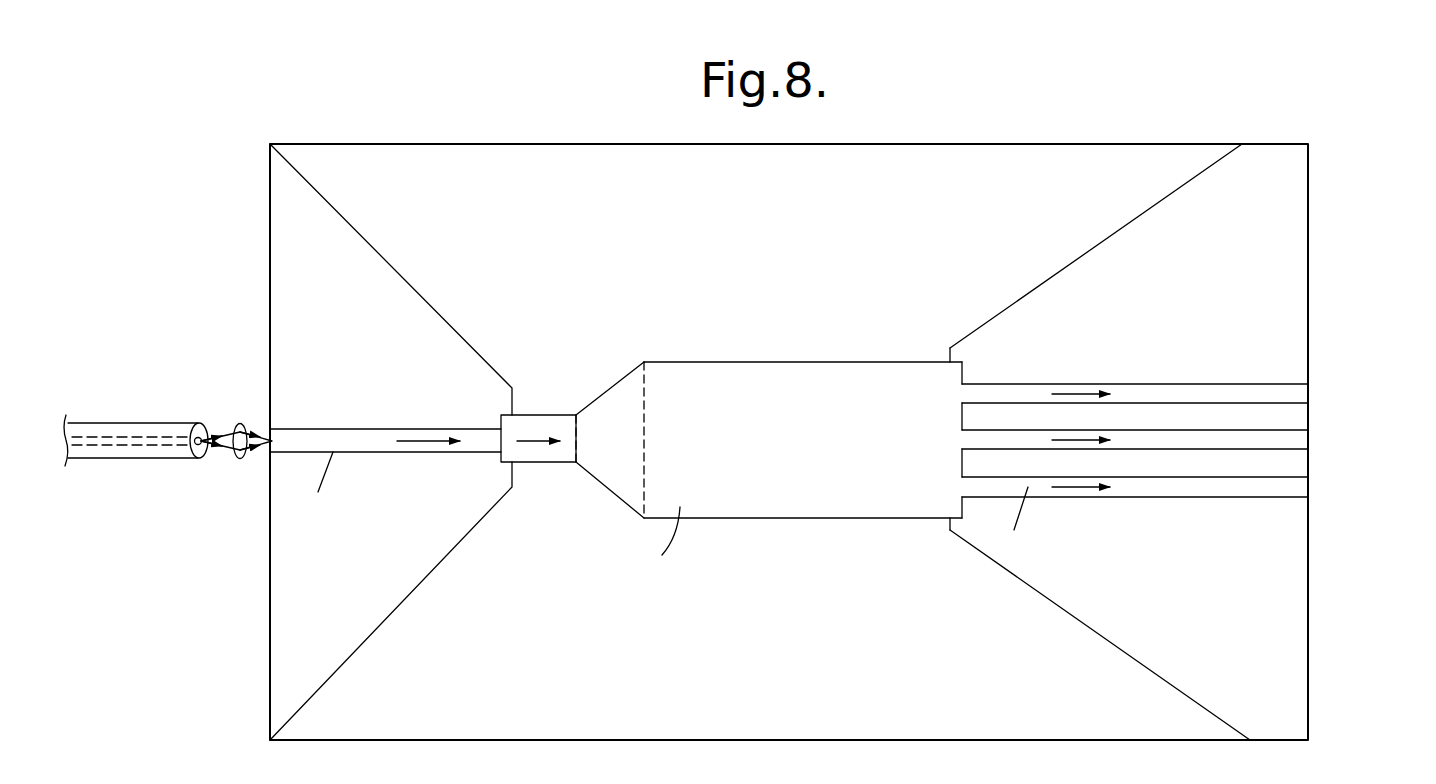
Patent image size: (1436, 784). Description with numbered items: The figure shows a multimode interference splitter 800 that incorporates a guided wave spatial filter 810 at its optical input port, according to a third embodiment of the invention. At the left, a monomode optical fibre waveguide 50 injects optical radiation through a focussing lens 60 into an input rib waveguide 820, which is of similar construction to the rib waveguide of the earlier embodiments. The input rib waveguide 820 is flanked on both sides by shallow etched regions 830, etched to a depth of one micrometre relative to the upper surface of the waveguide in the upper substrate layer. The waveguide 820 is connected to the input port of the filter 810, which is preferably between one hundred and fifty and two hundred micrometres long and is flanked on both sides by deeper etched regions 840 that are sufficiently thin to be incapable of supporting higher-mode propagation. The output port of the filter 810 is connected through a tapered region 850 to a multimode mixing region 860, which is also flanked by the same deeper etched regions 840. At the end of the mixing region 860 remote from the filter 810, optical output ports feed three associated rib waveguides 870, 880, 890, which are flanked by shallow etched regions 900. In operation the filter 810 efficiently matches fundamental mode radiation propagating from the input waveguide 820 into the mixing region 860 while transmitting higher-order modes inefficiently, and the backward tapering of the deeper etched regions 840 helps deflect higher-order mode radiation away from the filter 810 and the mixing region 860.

The monomode optical fibre waveguide 50 is at (130, 426).
The focussing lens 60 is at (240, 423).
The multimode interference splitter 800 is at (1115, 105).
The guided wave spatial filter 810 is at (553, 470).
The input rib waveguide 820 is at (370, 440).
The shallow etched regions 830 is at (366, 319).
The deeper etched regions 840 is at (807, 221).
The tapered region 850 is at (636, 454).
The multimode mixing region 860 is at (830, 456).
The rib waveguide 870 is at (1296, 393).
The rib waveguide 880 is at (1296, 440).
The rib waveguide 890 is at (1296, 486).
The shallow etched regions 900 is at (1229, 294).